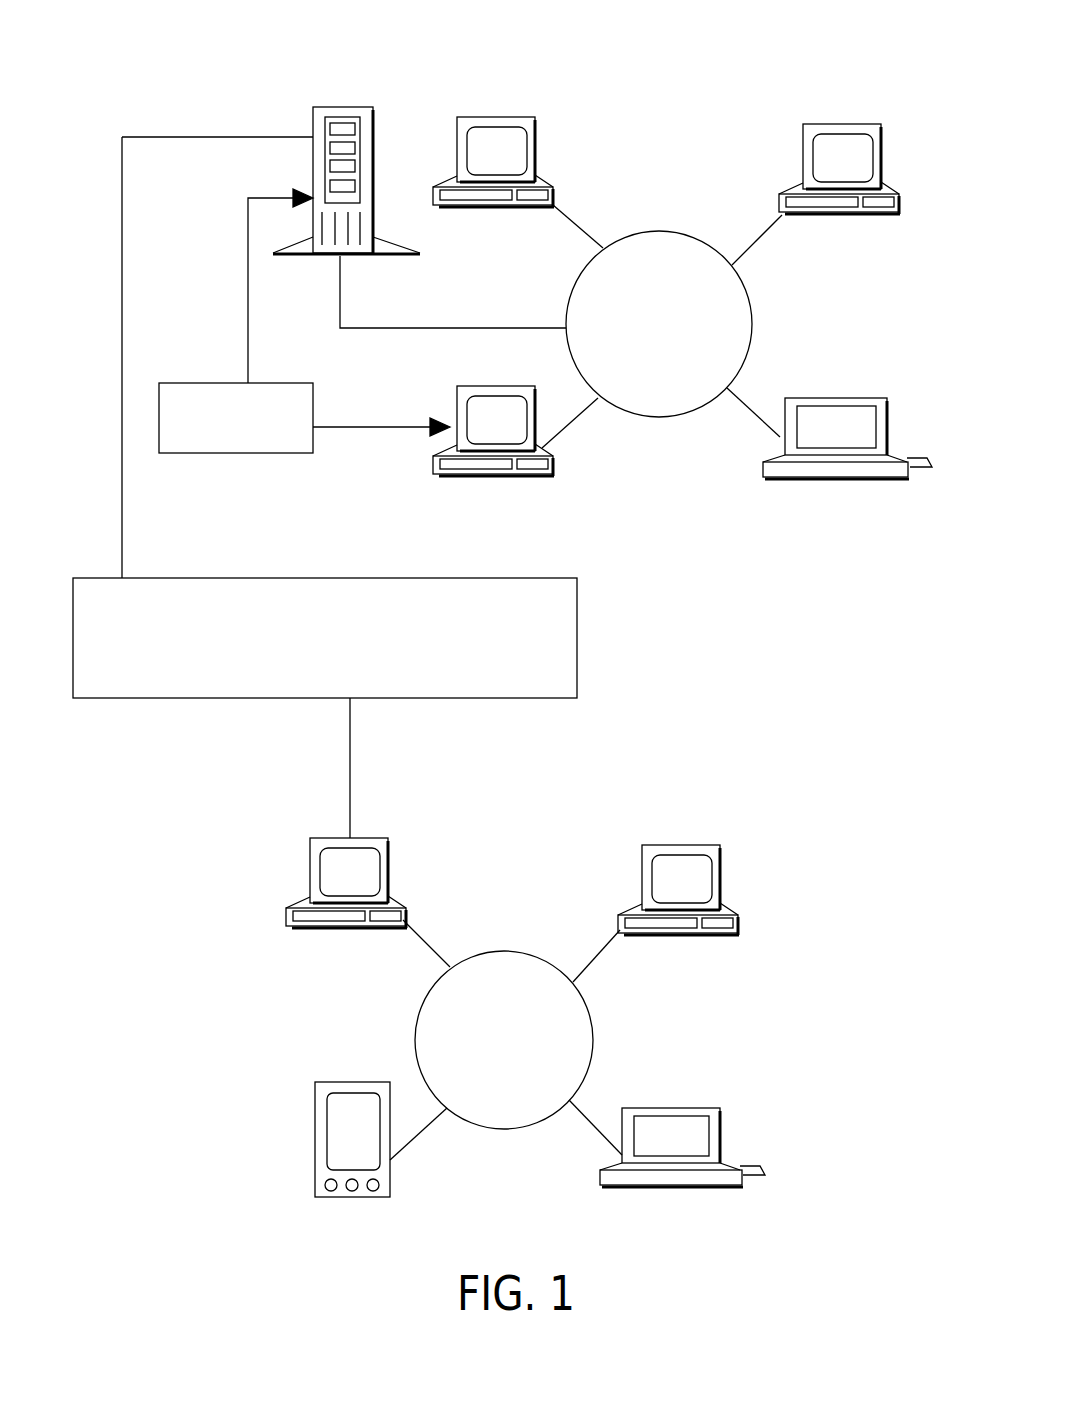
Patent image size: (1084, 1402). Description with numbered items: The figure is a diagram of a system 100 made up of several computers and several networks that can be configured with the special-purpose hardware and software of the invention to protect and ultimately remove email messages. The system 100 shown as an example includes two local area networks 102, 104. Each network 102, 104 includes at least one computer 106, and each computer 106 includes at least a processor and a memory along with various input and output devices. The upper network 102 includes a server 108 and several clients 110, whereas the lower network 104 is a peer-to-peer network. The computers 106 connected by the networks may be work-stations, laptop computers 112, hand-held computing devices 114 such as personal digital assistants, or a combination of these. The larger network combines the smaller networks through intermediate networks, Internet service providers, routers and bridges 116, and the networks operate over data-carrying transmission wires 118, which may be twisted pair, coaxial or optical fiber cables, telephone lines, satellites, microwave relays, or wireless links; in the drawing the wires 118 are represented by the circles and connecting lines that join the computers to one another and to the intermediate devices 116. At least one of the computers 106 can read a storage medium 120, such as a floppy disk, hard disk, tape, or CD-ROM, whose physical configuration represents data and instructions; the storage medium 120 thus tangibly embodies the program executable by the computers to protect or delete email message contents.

The system 100 is at (290, 63).
The local area network 102 is at (729, 540).
The local area network 104 is at (737, 746).
The computer 106 is at (626, 659).
The server 108 is at (357, 257).
The client 110 is at (537, 150).
The laptop computer 112 is at (807, 397).
The hand-held computing device 114 is at (390, 1183).
The routers and bridges 116 is at (553, 684).
The wires 118 is at (753, 315).
The storage medium 120 is at (313, 403).